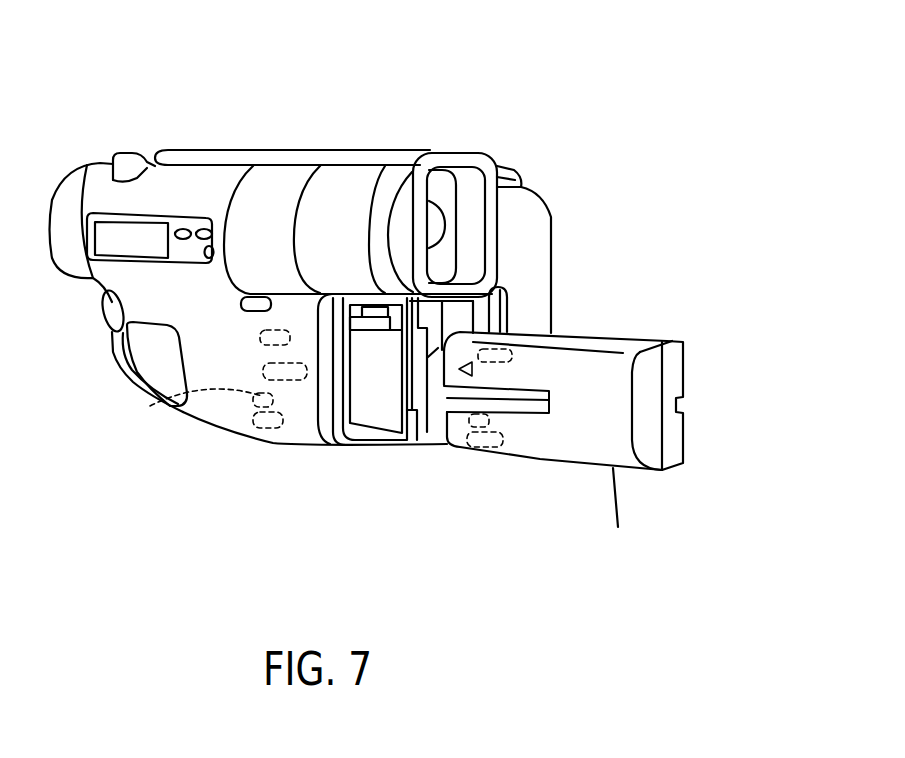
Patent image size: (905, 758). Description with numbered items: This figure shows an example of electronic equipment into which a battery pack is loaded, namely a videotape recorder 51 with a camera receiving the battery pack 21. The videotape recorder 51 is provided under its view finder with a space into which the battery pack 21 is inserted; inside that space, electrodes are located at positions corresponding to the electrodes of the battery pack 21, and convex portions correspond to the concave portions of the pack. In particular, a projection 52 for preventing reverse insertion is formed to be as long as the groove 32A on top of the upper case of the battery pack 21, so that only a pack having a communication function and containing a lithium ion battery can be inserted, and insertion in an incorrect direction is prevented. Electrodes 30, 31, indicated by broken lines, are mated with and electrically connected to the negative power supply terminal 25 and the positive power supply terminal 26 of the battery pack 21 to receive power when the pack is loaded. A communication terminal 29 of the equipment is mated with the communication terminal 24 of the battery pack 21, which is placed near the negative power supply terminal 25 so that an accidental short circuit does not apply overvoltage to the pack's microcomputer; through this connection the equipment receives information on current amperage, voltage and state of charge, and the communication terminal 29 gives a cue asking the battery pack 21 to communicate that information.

The videotape recorder with a camera 51 is at (322, 133).
The battery pack 21 is at (680, 367).
The communication terminal 24 is at (462, 450).
The negative power supply terminal 25 is at (503, 455).
The positive power supply terminal 26 is at (512, 332).
The communication terminal 29 is at (150, 406).
The electrode 30 is at (273, 338).
The electrode 31 is at (262, 430).
The groove 32A is at (487, 396).
The projection 52 is at (278, 370).